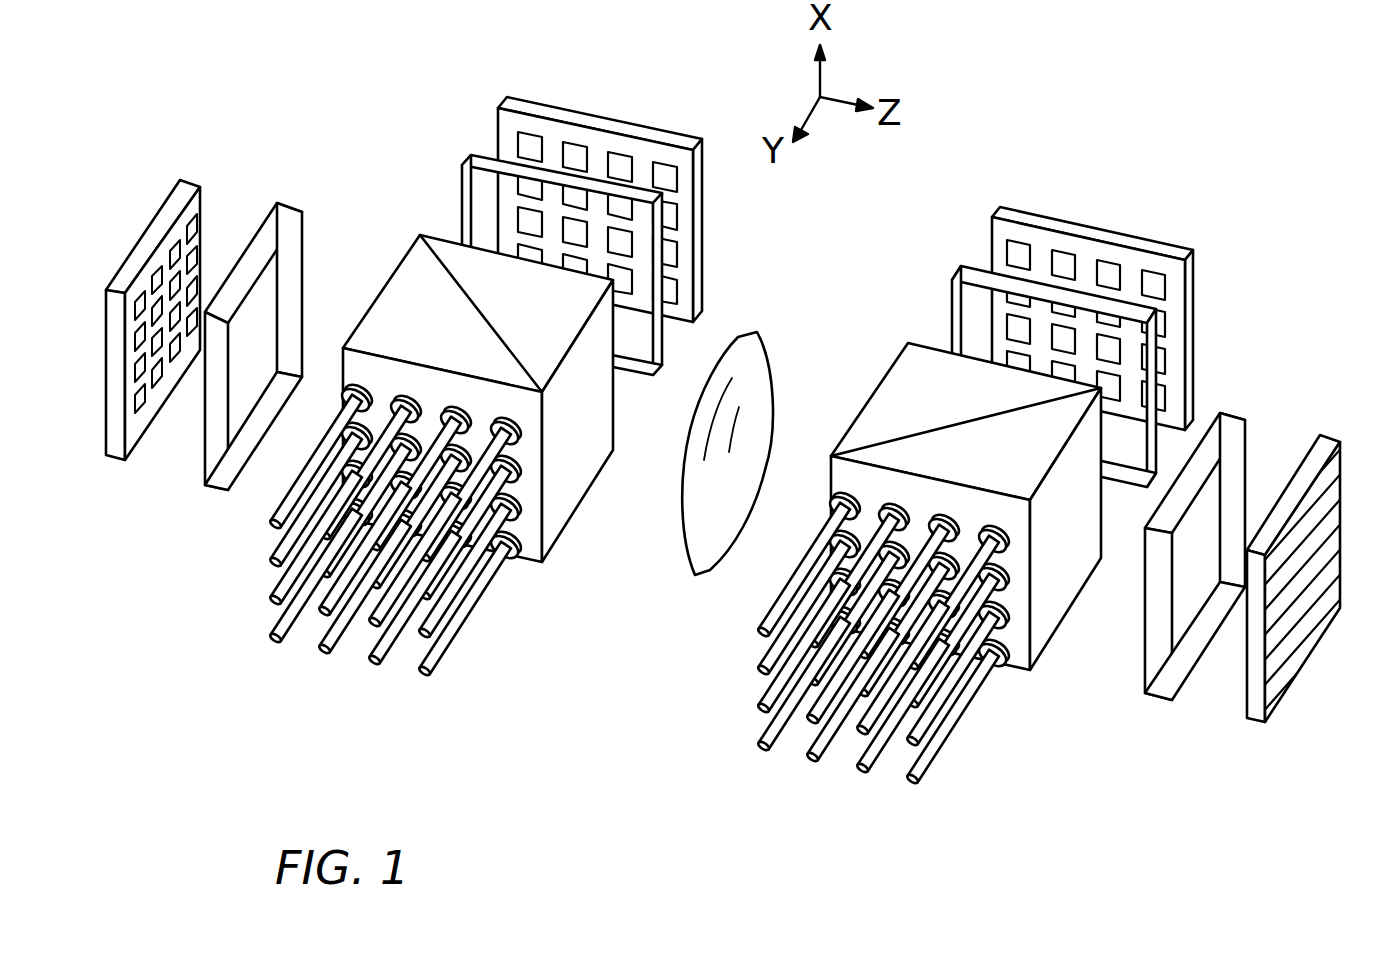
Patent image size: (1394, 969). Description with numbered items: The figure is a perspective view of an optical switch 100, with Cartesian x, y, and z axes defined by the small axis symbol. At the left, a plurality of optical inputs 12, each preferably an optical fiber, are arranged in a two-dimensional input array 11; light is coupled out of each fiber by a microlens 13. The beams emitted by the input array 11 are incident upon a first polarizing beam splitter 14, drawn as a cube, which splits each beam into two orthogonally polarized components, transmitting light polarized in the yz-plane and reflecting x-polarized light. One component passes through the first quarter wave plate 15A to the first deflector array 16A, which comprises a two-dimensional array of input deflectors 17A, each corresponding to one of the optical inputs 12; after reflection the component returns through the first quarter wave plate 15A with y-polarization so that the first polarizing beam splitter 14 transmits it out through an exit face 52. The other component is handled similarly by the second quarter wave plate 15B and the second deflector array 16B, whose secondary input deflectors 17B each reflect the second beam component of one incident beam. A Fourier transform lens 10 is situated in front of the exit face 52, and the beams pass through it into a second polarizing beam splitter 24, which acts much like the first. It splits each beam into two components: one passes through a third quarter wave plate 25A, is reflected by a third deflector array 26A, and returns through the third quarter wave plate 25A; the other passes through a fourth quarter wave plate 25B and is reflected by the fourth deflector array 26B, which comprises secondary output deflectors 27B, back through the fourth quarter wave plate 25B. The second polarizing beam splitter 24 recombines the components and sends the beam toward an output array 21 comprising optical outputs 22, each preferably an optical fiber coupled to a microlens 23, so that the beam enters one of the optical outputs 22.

The optical switch 100 is at (1240, 124).
The Fourier transform lens 10 is at (738, 330).
The input array 11 is at (262, 704).
The optical inputs 12 is at (377, 667).
The microlens 13 is at (523, 510).
The first polarizing beam splitter 14 is at (492, 355).
The first quarter wave plate 15A is at (263, 222).
The second quarter wave plate 15B is at (483, 167).
The first deflector array 16A is at (165, 303).
The second deflector array 16B is at (601, 169).
The input deflectors 17A is at (158, 392).
The secondary input deflectors 17B is at (663, 173).
The output array 21 is at (770, 786).
The optical outputs 22 is at (866, 774).
The microlens 23 is at (1011, 618).
The second polarizing beam splitter 24 is at (912, 367).
The third quarter wave plate 25A is at (1157, 702).
The fourth quarter wave plate 25B is at (977, 277).
The third deflector array 26A is at (1255, 723).
The fourth deflector array 26B is at (1096, 282).
The secondary output deflectors 27B is at (1153, 283).
The exit face 52 is at (593, 483).